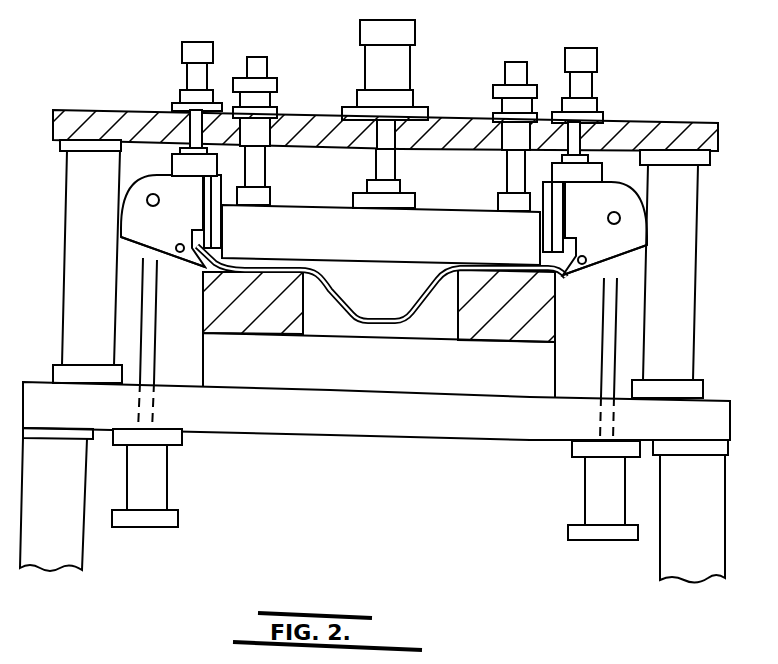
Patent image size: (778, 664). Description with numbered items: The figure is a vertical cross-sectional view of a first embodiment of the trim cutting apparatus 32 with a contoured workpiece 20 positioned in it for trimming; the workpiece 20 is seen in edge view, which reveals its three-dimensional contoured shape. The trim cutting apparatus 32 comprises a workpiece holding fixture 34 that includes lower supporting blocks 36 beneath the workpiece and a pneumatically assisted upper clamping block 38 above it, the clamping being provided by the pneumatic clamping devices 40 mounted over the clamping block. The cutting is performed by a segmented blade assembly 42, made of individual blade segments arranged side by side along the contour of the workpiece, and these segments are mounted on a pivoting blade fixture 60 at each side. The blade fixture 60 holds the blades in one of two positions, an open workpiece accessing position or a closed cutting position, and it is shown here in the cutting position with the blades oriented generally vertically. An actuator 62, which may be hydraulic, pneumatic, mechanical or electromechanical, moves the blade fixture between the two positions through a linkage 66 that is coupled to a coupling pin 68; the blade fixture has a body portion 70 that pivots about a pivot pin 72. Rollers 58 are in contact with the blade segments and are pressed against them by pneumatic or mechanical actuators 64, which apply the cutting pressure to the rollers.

The workpiece 20 is at (395, 322).
The trim cutting apparatus 32 is at (442, 452).
The workpiece holding fixture 34 is at (572, 339).
The lower supporting blocks 36 is at (252, 325).
The upper clamping block 38 is at (437, 218).
The pneumatic clamping devices 40 is at (373, 72).
The segmented blade assembly 42 is at (212, 223).
The rollers 58 is at (176, 163).
The blade fixture 60 is at (136, 232).
The actuator 62 is at (160, 479).
The actuators 64 is at (193, 77).
The linkage 66 is at (150, 347).
The coupling pin 68 is at (147, 200).
The body portion 70 is at (143, 238).
The pivot pin 72 is at (177, 253).